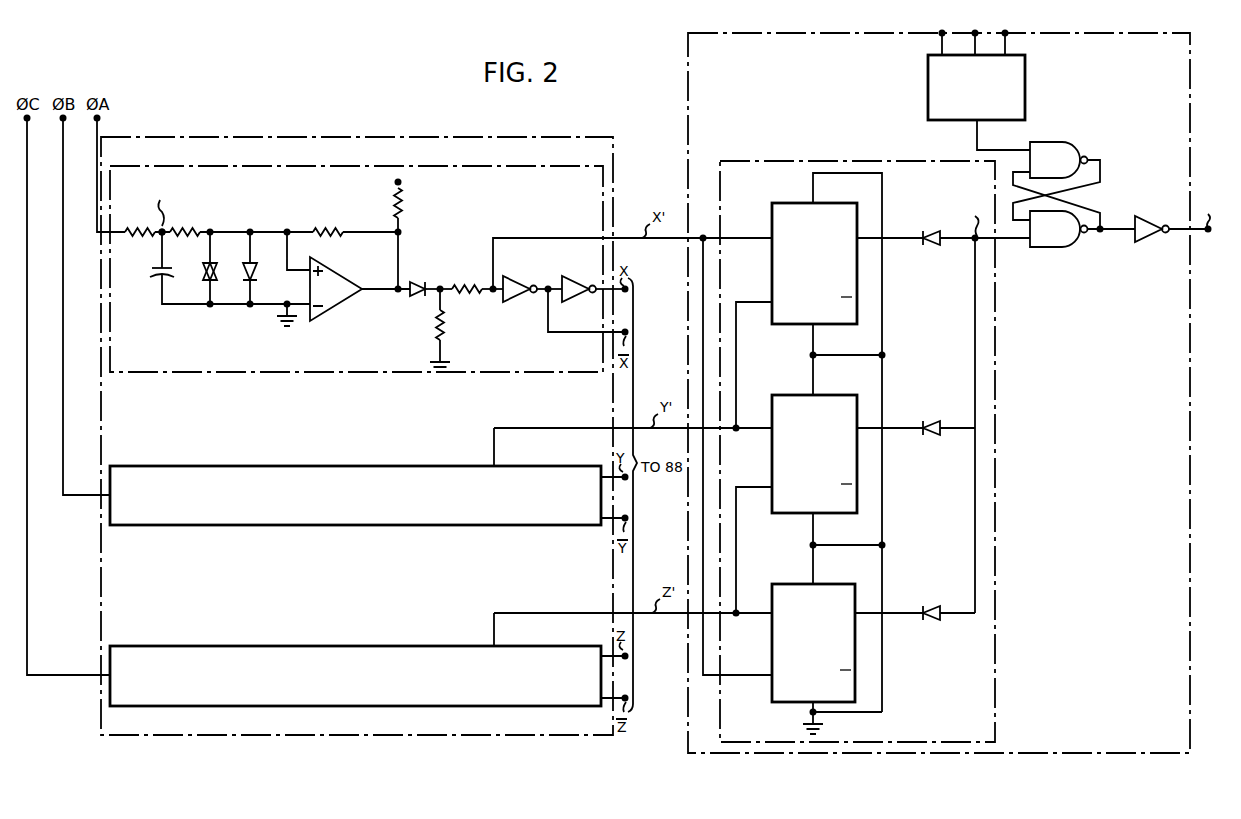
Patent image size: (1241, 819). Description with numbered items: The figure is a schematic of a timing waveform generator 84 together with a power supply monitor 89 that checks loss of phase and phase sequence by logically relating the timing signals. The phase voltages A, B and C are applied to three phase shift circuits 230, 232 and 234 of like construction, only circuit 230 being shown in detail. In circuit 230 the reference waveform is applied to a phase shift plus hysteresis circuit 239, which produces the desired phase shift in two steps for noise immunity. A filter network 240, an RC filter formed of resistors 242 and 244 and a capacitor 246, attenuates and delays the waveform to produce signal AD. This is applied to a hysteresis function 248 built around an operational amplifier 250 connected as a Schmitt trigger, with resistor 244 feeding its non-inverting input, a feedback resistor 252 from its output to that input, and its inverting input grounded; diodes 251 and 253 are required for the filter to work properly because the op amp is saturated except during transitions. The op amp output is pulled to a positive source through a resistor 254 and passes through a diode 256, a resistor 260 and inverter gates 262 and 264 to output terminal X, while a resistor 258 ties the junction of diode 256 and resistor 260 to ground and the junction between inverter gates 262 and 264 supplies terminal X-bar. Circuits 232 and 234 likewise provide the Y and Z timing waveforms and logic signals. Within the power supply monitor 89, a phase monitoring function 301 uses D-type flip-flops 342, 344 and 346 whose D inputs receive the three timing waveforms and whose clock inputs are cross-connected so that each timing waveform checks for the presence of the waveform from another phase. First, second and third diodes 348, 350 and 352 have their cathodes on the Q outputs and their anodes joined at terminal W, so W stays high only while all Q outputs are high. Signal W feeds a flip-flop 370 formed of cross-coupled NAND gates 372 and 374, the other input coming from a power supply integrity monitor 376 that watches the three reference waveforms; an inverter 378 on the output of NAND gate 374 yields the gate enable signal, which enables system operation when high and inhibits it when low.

The timing waveform generator 84 is at (282, 137).
The phase shift circuit 230 is at (351, 166).
The phase shift plus hysteresis circuit 239 is at (261, 191).
The filter network 240 is at (199, 215).
The resistor 242 is at (136, 230).
The resistor 244 is at (201, 230).
The capacitor 246 is at (153, 273).
The hysteresis function 248 is at (268, 225).
The operational amplifier 250 is at (324, 304).
The diode 251 is at (204, 286).
The feedback resistor 252 is at (330, 232).
The diode 253 is at (249, 288).
The resistor 254 is at (407, 233).
The diode 256 is at (425, 296).
The resistor 258 is at (442, 314).
The resistor 260 is at (472, 287).
The inverter gate 262 is at (510, 285).
The inverter gate 264 is at (572, 285).
The phase shift circuit 232 is at (216, 525).
The phase shift circuit 234 is at (174, 706).
The power supply monitor 89 is at (688, 740).
The phase monitoring function 301 is at (1040, 359).
The flip-flop 342 is at (772, 262).
The flip-flop 344 is at (772, 448).
The flip-flop 346 is at (770, 656).
The first diode 348 is at (932, 245).
The second diode 350 is at (932, 426).
The third diode 352 is at (932, 611).
The flip-flop 370 is at (1143, 193).
The NAND gate 372 is at (1069, 151).
The NAND gate 374 is at (1050, 248).
The power supply integrity monitor 376 is at (1025, 84).
The inverter 378 is at (1147, 248).